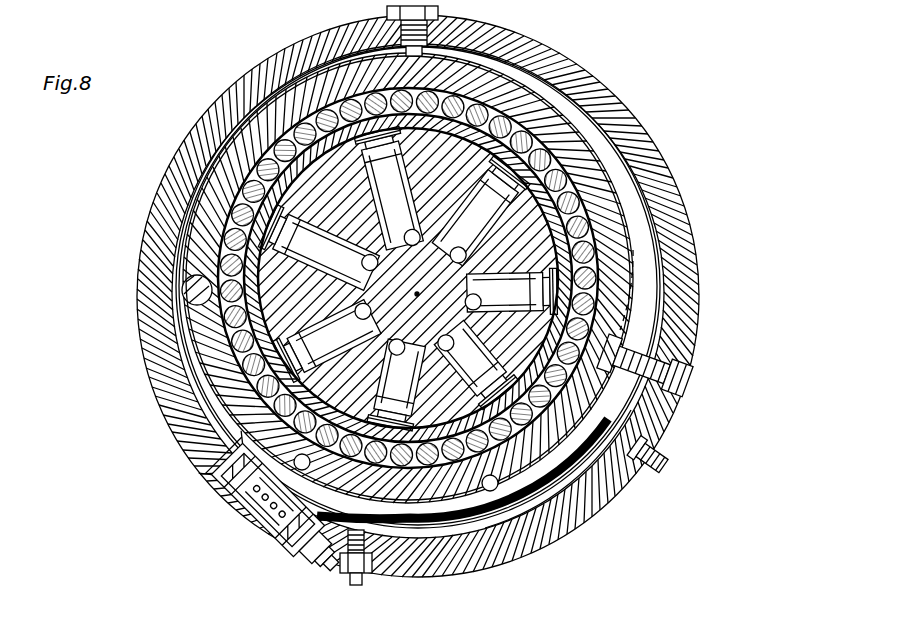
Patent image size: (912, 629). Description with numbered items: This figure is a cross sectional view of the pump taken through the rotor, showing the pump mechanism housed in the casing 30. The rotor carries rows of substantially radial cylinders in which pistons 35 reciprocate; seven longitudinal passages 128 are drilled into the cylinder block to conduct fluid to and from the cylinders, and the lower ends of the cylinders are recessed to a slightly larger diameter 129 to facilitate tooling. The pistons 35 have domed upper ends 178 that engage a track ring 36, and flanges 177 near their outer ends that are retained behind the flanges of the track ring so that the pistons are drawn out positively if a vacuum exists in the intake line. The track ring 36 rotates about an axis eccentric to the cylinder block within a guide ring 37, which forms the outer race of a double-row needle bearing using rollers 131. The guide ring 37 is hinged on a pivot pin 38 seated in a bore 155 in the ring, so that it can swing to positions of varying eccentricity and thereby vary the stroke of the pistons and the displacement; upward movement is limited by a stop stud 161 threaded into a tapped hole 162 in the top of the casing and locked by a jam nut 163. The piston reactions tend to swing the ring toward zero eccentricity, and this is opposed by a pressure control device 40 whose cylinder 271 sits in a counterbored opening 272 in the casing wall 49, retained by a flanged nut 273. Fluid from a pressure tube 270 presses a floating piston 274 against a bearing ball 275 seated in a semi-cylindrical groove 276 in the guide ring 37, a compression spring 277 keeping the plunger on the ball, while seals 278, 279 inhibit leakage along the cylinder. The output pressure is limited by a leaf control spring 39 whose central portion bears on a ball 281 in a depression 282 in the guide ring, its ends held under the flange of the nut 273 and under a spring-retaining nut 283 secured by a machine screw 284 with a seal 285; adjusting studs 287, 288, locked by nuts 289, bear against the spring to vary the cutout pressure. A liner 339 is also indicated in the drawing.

The casing 30 is at (286, 618).
The pistons 35 is at (397, 183).
The track ring 36 is at (250, 190).
The guide ring 37 is at (265, 125).
The pivot pin 38 is at (205, 312).
The control spring 39 is at (560, 530).
The pressure control device 40 is at (224, 523).
The casing wall 49 is at (655, 140).
The passages 128 is at (418, 284).
The recessed larger diameter 129 is at (370, 281).
The rollers 131 is at (655, 225).
The bore 155 is at (190, 285).
The stop stud 161 is at (440, 12).
The tapped hole 162 is at (445, 42).
The jam nut 163 is at (390, 12).
The piston flanges 177 is at (600, 105).
The domed upper ends 178 is at (512, 128).
The pressure tube 270 is at (330, 565).
The cylinder 271 is at (278, 546).
The counterbored opening 272 is at (245, 475).
The flanged nut 273 is at (238, 457).
The floating piston 274 is at (268, 534).
The bearing ball 275 is at (228, 440).
The semi-cylindrical groove 276 is at (310, 470).
The compression spring 277 is at (262, 516).
The seal 278 is at (252, 493).
The seal 279 is at (262, 502).
The ball 281 is at (478, 490).
The depression 282 is at (420, 522).
The spring-retaining nut 283 is at (655, 332).
The machine screw 284 is at (693, 370).
The seal 285 is at (666, 404).
The adjusting stud 287 is at (356, 586).
The adjusting stud 288 is at (667, 463).
The nuts 289 is at (670, 441).
The liner 339 is at (350, 38).